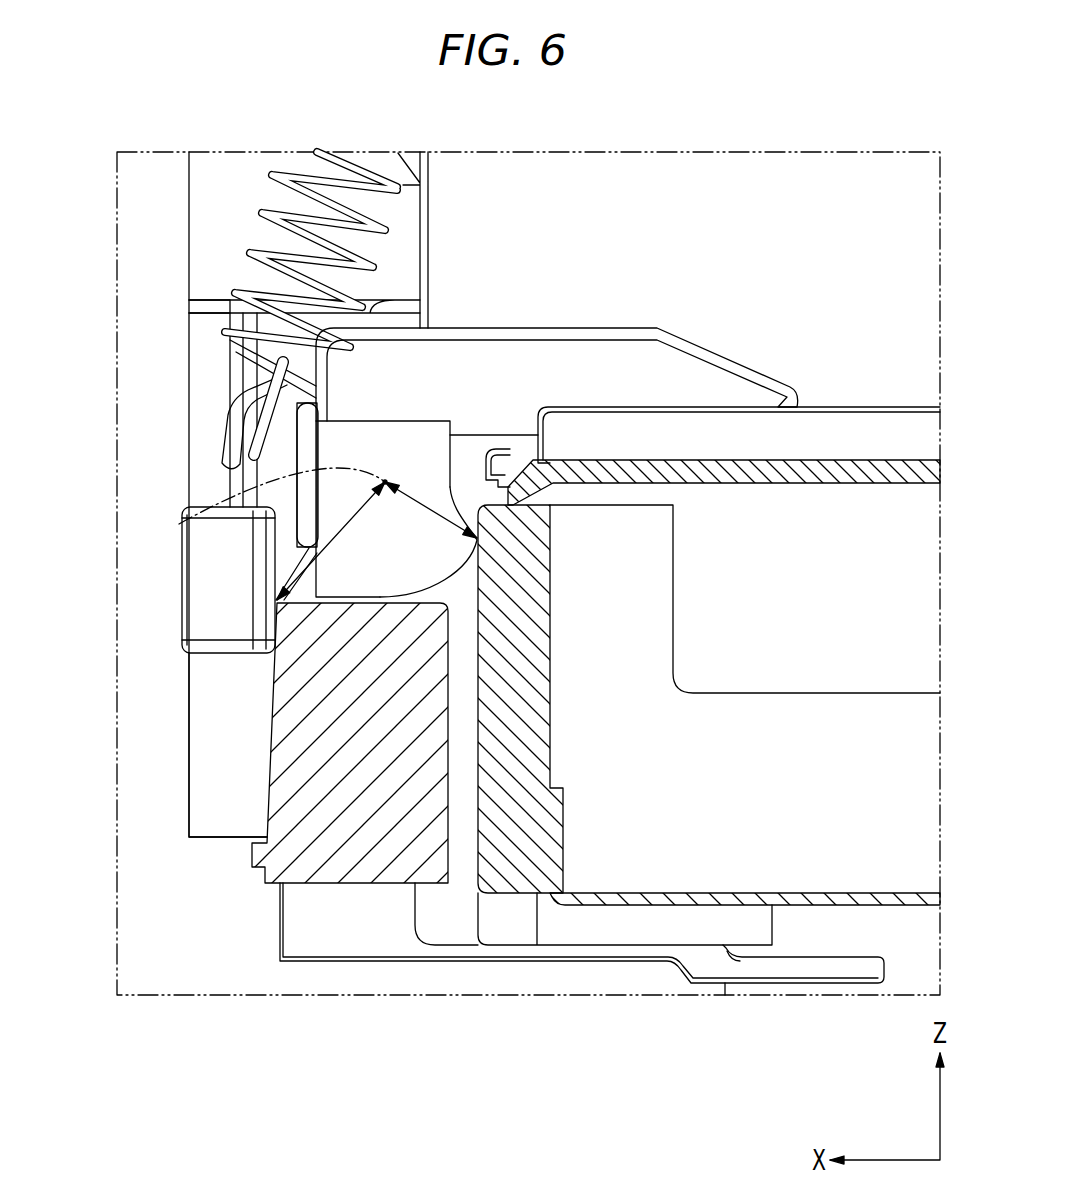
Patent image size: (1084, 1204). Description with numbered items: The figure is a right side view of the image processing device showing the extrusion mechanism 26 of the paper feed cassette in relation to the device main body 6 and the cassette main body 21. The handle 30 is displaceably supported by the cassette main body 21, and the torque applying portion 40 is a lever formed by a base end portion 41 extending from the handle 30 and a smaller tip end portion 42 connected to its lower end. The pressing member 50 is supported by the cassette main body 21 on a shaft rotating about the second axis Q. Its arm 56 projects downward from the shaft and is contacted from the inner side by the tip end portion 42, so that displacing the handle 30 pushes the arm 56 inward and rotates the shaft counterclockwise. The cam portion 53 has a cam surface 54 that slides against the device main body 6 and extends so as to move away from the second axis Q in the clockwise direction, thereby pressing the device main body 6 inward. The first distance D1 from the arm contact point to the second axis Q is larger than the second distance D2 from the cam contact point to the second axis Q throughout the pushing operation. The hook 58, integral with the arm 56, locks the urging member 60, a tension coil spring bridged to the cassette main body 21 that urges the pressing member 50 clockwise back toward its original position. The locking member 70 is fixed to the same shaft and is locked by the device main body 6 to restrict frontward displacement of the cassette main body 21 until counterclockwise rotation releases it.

The device main body 6 is at (517, 873).
The cassette main body 21 is at (537, 228).
The extrusion mechanism 26 is at (186, 360).
The handle 30 is at (214, 223).
The torque applying portion 40 is at (187, 468).
The base end portion 41 is at (207, 383).
The tip end portion 42 is at (207, 622).
The pressing member 50 is at (472, 317).
The cam portion 53 is at (348, 567).
The cam surface 54 is at (463, 567).
The arm 56 is at (292, 570).
The hook 58 is at (232, 440).
The urging member 60 is at (253, 253).
The locking member 70 is at (648, 325).
The second axis Q is at (179, 524).
The first distance D1 is at (322, 548).
The second distance D2 is at (433, 507).